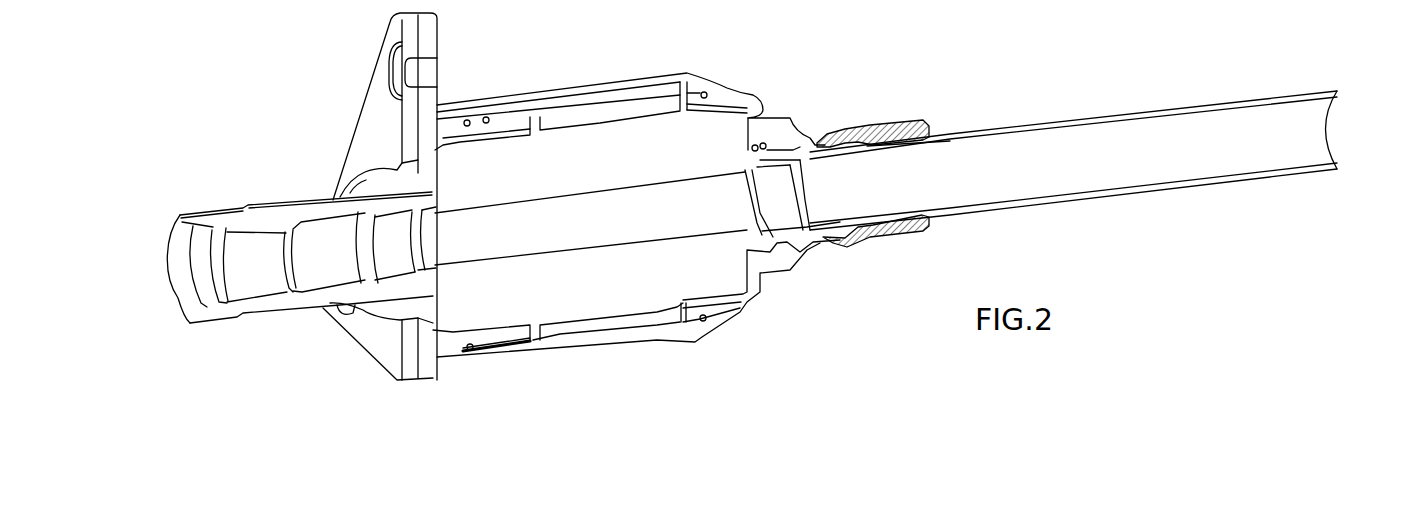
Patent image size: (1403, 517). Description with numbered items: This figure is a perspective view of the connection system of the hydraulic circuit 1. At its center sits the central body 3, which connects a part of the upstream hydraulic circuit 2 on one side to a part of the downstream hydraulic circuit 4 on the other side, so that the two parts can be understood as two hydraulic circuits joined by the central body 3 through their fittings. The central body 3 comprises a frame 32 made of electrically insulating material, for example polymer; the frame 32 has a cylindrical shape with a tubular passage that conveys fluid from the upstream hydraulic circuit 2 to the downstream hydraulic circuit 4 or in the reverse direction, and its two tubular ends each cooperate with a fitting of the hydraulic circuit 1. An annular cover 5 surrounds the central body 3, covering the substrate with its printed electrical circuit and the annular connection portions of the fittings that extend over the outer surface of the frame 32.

The hydraulic circuit 1 is at (830, 77).
The upstream hydraulic circuit 2 is at (256, 173).
The central body 3 is at (722, 132).
The downstream hydraulic circuit 4 is at (1243, 196).
The annular cover 5 is at (616, 84).
The frame 32 is at (658, 287).